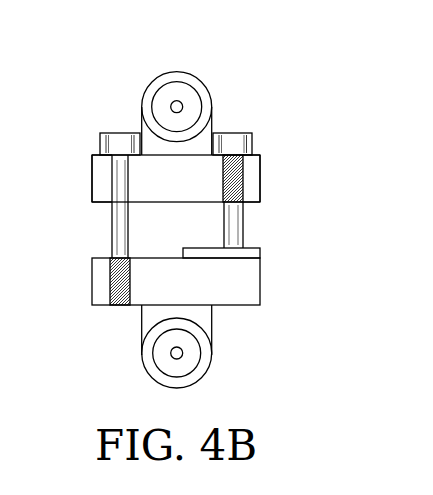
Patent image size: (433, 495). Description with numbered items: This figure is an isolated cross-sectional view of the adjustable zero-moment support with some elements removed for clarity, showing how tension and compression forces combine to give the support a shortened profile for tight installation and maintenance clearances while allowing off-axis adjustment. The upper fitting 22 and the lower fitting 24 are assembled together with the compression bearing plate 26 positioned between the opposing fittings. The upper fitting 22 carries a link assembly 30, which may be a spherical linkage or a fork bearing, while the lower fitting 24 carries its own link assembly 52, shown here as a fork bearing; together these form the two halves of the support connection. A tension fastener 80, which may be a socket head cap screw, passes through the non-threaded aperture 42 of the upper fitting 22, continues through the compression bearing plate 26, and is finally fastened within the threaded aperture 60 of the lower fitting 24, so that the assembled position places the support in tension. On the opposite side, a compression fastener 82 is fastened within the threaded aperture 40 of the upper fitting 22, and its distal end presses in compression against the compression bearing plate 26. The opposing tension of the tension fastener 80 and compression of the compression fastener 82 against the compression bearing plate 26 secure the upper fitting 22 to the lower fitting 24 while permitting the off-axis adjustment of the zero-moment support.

The upper fitting 22 is at (92, 193).
The lower fitting 24 is at (92, 270).
The compression bearing plate 26 is at (260, 248).
The link assembly 30 is at (190, 72).
The threaded aperture 40 is at (260, 168).
The non-threaded aperture 42 is at (92, 168).
The link assembly 52 is at (195, 370).
The threaded aperture 60 is at (92, 295).
The tension fastener 80 is at (117, 133).
The compression fastener 82 is at (233, 133).